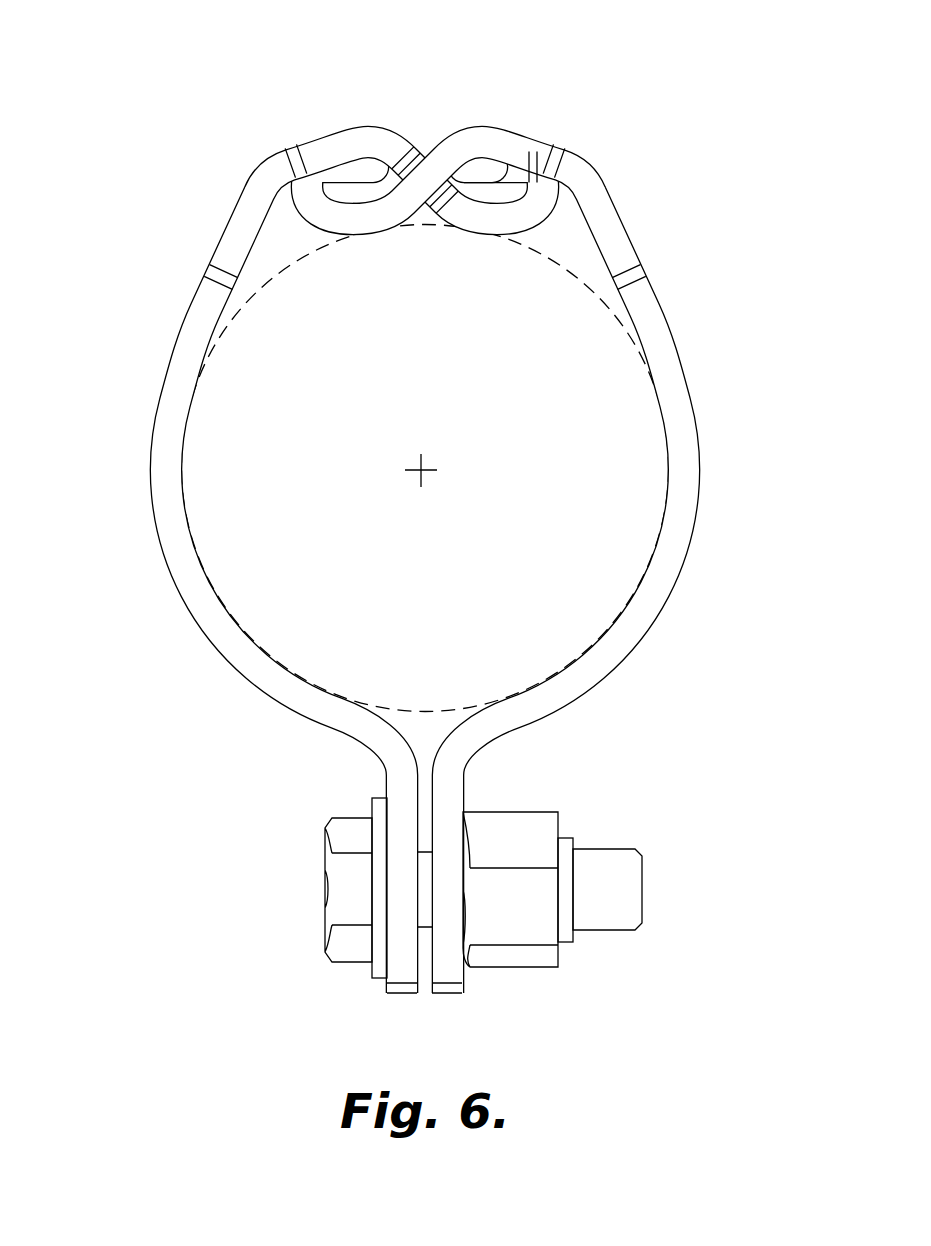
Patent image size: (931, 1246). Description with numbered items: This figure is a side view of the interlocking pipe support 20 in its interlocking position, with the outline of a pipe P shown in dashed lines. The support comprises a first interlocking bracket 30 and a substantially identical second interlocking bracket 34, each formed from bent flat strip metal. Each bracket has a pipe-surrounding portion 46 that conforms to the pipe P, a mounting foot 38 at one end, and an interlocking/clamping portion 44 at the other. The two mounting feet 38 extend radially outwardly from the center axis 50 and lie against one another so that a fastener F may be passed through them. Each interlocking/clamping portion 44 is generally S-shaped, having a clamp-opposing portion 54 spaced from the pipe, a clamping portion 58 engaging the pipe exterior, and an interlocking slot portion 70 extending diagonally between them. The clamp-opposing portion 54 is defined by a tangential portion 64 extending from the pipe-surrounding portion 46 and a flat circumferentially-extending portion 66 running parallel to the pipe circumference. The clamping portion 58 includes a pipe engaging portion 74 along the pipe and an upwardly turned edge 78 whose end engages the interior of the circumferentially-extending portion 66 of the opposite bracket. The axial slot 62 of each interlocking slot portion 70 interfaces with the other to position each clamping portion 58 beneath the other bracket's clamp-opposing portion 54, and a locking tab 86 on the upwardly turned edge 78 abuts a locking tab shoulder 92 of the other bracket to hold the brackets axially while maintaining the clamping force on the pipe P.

The interlocking pipe support 20 is at (680, 66).
The first interlocking bracket 30 is at (410, 567).
The second interlocking bracket 34 is at (425, 567).
The mounting foot 38 is at (398, 987).
The interlocking/clamping portion 44 is at (386, 124).
The pipe-surrounding portion 46 is at (686, 524).
The center axis 50 is at (428, 462).
The clamp-opposing portion 54 is at (250, 162).
The clamping portion 58 is at (476, 234).
The axial slot 62 is at (412, 148).
The tangential portion 64 is at (222, 231).
The circumferentially-extending portion 66 is at (298, 150).
The interlocking slot portion 70 is at (350, 157).
The pipe engaging portion 74 is at (360, 240).
The upwardly turned edge 78 is at (262, 204).
The locking tab 86 is at (568, 160).
The locking tab shoulder 92 is at (545, 152).
The pipe P is at (362, 746).
The fastener F is at (530, 813).